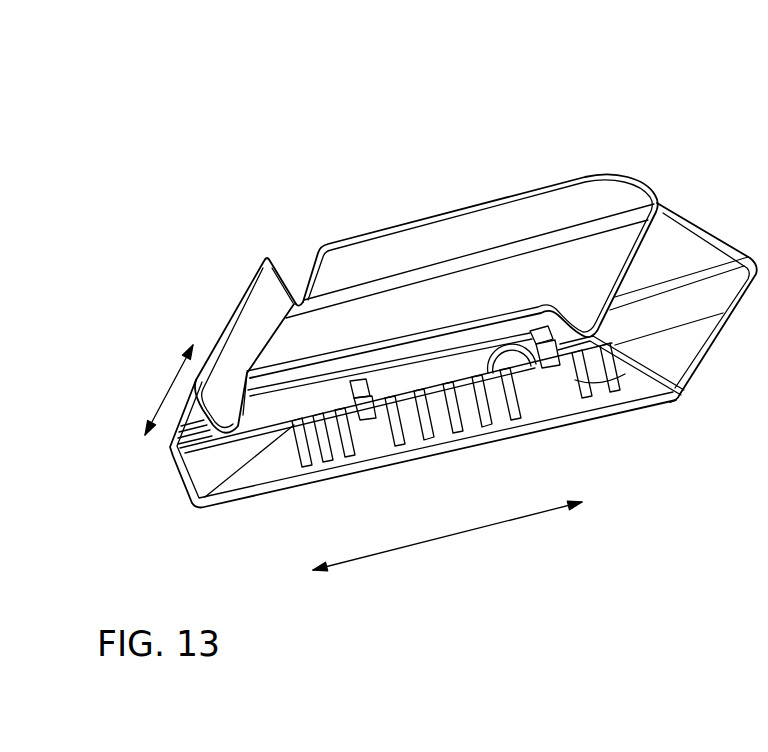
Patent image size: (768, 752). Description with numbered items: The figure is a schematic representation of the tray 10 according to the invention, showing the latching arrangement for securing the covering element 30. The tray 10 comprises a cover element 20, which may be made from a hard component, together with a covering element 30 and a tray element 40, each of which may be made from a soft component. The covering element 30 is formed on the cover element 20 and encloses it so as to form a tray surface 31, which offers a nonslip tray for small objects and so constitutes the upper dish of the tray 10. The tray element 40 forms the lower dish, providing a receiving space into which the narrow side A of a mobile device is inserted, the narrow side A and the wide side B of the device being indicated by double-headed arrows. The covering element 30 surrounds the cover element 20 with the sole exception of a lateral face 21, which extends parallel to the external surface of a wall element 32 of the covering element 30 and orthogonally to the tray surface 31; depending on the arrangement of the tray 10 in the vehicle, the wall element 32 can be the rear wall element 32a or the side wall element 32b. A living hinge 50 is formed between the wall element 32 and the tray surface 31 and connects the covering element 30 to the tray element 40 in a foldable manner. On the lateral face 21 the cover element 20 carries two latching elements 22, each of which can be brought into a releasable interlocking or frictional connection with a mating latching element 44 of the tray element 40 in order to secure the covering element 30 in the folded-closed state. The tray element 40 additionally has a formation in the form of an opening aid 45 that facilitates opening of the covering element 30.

The tray 10 is at (235, 198).
The cover element 20 is at (664, 187).
The lateral face 21 is at (275, 419).
The latching element 22 is at (367, 410).
The covering element 30 is at (566, 164).
The tray surface 31 is at (382, 308).
The wall element 32 is at (408, 345).
The rear wall element 32a is at (252, 328).
The side wall element 32b is at (497, 218).
The tray element 40 is at (717, 215).
The mating latching element 44 is at (386, 438).
The opening aid 45 is at (510, 381).
The living hinge 50 is at (298, 286).
The narrow side A is at (170, 387).
The wide side B is at (467, 532).